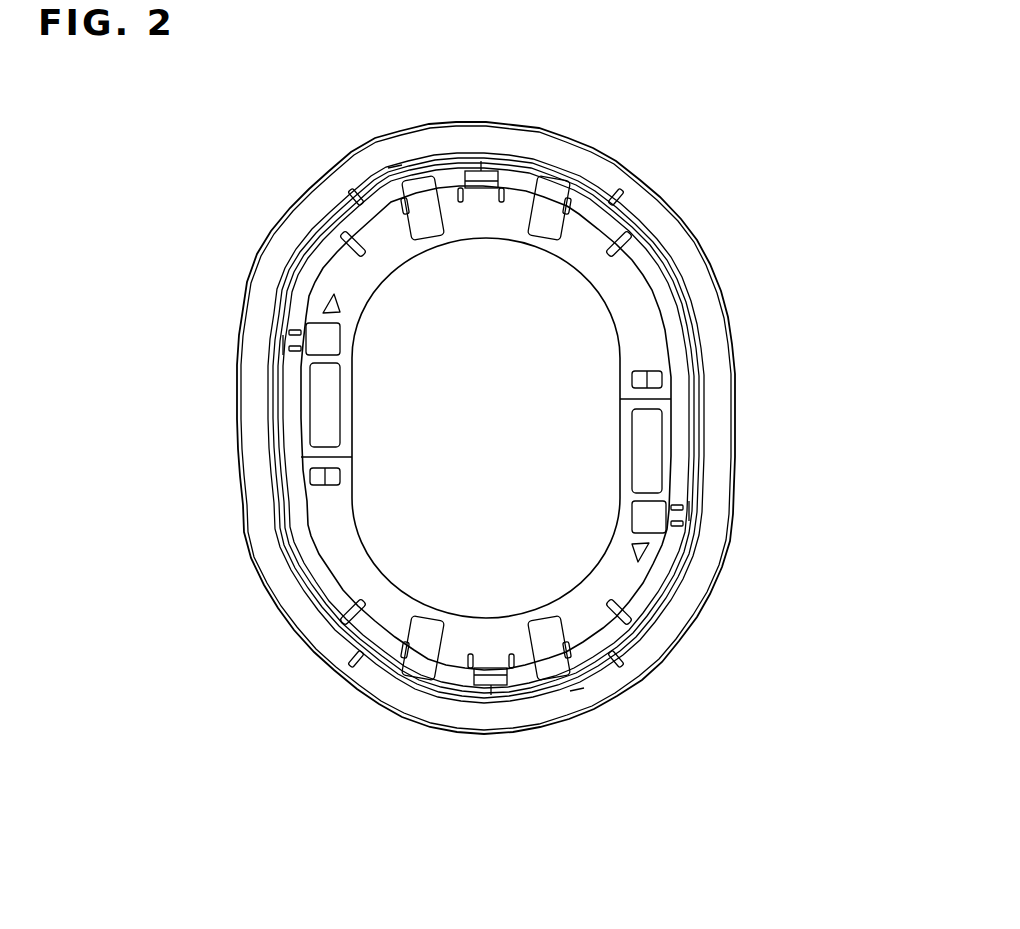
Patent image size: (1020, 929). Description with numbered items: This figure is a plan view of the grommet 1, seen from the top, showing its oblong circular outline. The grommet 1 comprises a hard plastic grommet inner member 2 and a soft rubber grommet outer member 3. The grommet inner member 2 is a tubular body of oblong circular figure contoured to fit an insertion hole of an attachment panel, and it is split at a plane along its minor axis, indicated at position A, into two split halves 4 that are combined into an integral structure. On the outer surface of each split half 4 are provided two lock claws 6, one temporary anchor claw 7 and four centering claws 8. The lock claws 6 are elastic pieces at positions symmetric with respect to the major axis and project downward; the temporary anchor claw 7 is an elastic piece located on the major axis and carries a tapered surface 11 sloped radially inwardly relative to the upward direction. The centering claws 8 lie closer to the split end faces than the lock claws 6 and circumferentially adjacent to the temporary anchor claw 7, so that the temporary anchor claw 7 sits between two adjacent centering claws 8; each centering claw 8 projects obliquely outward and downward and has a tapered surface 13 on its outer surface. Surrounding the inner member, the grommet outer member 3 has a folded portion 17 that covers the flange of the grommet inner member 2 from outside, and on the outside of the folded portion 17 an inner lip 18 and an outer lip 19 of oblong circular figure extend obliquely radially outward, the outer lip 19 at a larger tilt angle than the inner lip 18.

The grommet 1 is at (678, 132).
The grommet inner member 2 is at (678, 373).
The grommet outer member 3 is at (738, 529).
The split half 4 is at (452, 178).
The lock claw 6 is at (306, 240).
The temporary anchor claw 7 is at (481, 166).
The centering claw 8 is at (412, 183).
The tapered surface 11 is at (499, 173).
The tapered surface 13 is at (396, 188).
The folded portion 17 is at (704, 591).
The inner lip 18 is at (694, 441).
The outer lip 19 is at (722, 489).
The split position A is at (300, 457).